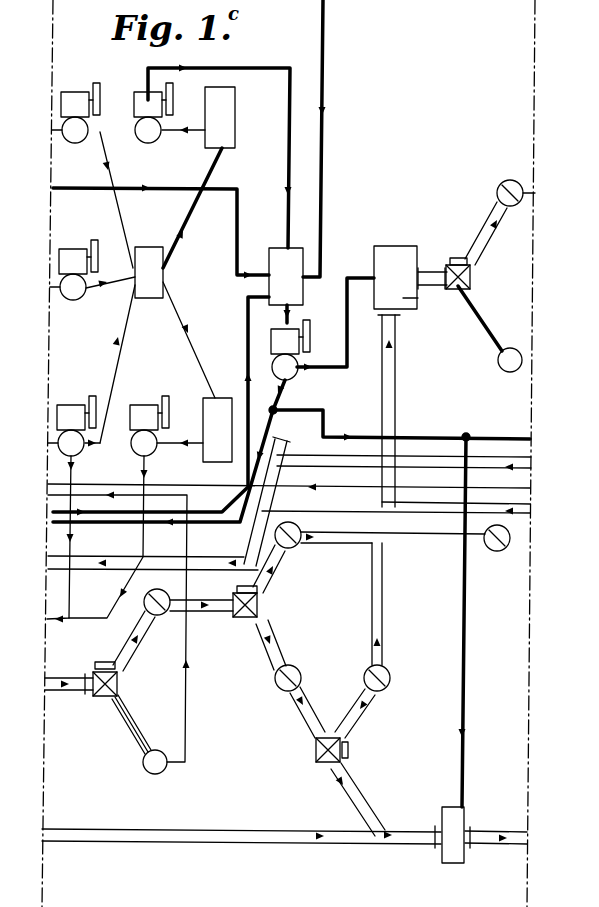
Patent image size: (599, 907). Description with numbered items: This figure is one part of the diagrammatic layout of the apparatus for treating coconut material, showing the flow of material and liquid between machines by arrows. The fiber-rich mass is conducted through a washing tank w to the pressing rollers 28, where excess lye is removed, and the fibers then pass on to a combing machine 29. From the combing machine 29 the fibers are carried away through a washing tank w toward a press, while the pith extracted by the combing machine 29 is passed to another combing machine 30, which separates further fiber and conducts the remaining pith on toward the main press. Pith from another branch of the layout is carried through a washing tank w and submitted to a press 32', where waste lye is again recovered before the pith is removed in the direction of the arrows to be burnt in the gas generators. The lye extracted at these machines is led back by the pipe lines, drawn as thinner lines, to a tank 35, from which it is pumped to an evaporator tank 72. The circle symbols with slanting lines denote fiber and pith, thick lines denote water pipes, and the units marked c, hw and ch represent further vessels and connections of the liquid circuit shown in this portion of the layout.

The evaporator tank 72 is at (149, 272).
The tank 35 is at (217, 430).
The press 32' is at (482, 273).
The pressing rollers 28 is at (107, 692).
The combing machine 29 is at (245, 618).
The combing machine 30 is at (318, 752).
The cold water vessel c is at (220, 117).
The hot water vessel hw is at (286, 276).
The washing tank w is at (419, 554).
The check valve ch is at (332, 561).